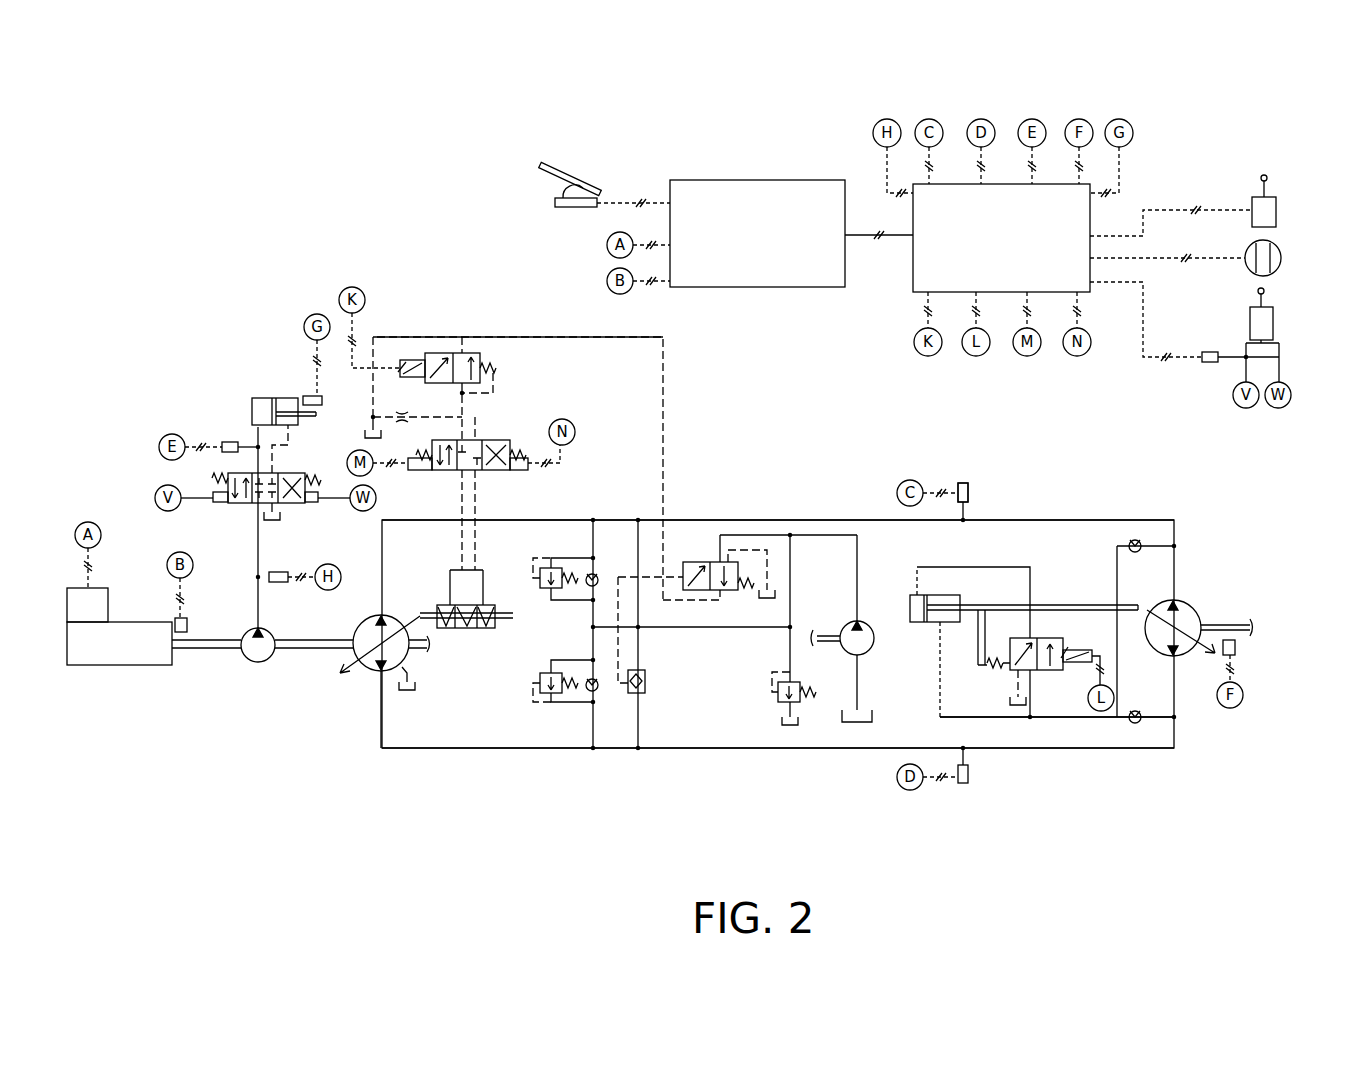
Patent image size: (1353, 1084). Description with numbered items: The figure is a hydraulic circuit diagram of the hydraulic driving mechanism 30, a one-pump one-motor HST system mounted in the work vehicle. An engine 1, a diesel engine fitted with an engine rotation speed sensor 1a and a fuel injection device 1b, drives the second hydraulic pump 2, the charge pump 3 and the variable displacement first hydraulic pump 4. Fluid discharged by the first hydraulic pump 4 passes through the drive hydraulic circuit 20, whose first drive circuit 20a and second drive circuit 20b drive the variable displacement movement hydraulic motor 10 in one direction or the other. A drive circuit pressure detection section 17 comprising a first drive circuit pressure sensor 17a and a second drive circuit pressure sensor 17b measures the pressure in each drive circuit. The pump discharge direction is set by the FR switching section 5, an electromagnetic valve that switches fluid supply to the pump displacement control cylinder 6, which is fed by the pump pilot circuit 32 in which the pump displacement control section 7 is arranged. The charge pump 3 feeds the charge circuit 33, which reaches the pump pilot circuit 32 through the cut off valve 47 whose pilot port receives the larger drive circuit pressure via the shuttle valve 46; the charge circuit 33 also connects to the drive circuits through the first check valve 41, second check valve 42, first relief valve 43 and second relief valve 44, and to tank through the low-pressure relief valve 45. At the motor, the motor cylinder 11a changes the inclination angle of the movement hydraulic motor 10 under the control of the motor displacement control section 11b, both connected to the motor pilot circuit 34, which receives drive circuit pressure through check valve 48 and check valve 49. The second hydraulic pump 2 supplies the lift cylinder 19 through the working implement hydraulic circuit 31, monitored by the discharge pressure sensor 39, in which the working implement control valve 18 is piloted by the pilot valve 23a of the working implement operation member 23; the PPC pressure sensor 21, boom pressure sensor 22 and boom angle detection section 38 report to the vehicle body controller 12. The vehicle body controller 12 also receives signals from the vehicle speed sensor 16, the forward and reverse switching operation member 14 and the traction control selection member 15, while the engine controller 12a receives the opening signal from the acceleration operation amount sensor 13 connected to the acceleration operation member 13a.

The engine 1 is at (123, 667).
The engine rotation speed sensor 1a is at (189, 624).
The fuel injection device 1b is at (105, 602).
The second hydraulic pump 2 is at (265, 628).
The charge pump 3 is at (864, 621).
The first hydraulic pump 4 is at (393, 618).
The FR switching section 5 is at (494, 471).
The pump displacement control cylinder 6 is at (487, 630).
The pump displacement control section 7 is at (439, 353).
The movement hydraulic motor 10 is at (1190, 602).
The motor cylinder 11a is at (917, 593).
The motor displacement control section 11b is at (1045, 636).
The vehicle body controller 12 is at (913, 270).
The engine controller 12a is at (773, 178).
The acceleration operation amount sensor 13 is at (555, 202).
The acceleration operation member 13a is at (578, 184).
The forward and reverse switching operation member 14 is at (1256, 191).
The traction control selection member 15 is at (1282, 258).
The vehicle speed sensor 16 is at (1238, 650).
The drive circuit pressure detection section 17 is at (945, 470).
The first drive circuit pressure sensor 17a is at (966, 483).
The second drive circuit pressure sensor 17b is at (964, 783).
The working implement control valve 18 is at (300, 507).
The lift cylinder 19 is at (262, 398).
The drive hydraulic circuit 20 is at (1005, 495).
The first drive circuit 20a is at (805, 520).
The second drive circuit 20b is at (738, 748).
The PPC pressure sensor 21 is at (1207, 352).
The boom pressure sensor 22 is at (225, 442).
The working implement operation member 23 is at (1267, 296).
The pilot valve 23a is at (1275, 322).
The hydraulic driving mechanism 30 is at (408, 287).
The working implement hydraulic circuit 31 is at (257, 527).
The pump pilot circuit 32 is at (573, 337).
The charge circuit 33 is at (728, 627).
The motor pilot circuit 34 is at (1065, 718).
The boom angle detection section 38 is at (305, 396).
The discharge pressure sensor 39 is at (282, 572).
The first check valve 41 is at (598, 574).
The second check valve 42 is at (598, 692).
The first relief valve 43 is at (545, 590).
The second relief valve 44 is at (545, 671).
The low-pressure relief valve 45 is at (778, 695).
The shuttle valve 46 is at (647, 692).
The cut off valve 47 is at (695, 559).
The check valve 48 is at (1139, 553).
The check valve 49 is at (1137, 710).